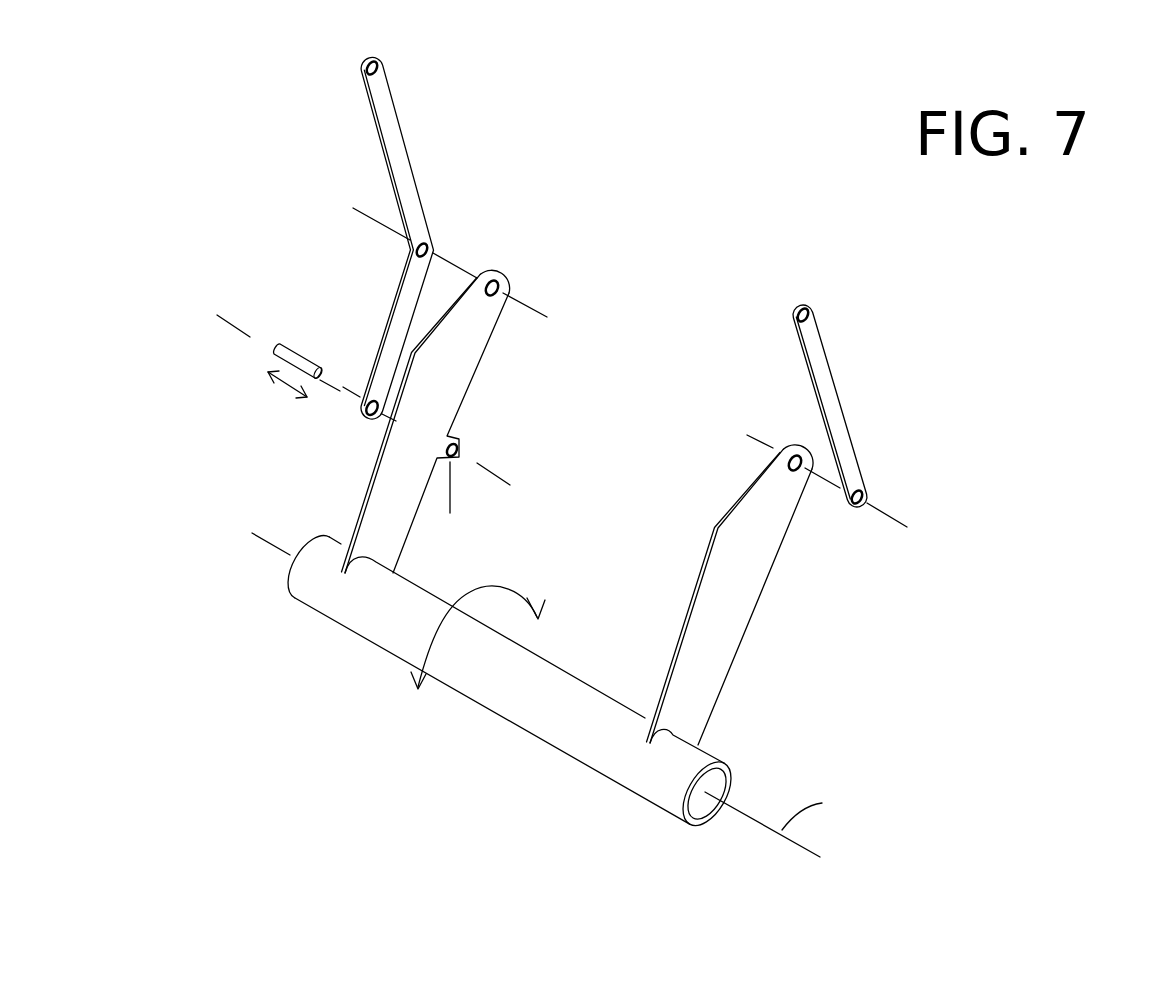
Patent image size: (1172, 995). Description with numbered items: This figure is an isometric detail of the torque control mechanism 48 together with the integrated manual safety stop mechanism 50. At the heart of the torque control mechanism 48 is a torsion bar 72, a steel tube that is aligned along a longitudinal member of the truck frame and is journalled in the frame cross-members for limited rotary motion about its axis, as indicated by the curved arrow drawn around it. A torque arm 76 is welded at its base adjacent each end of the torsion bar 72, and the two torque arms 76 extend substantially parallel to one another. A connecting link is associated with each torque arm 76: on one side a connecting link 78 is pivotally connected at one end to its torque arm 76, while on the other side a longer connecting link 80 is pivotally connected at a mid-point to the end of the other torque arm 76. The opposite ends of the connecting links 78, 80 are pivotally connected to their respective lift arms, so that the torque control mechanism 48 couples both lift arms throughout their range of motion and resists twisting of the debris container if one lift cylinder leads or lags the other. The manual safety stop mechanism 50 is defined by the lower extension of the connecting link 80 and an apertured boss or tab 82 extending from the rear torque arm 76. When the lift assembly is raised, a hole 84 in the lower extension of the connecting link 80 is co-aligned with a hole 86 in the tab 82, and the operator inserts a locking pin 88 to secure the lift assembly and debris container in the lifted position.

The torque control mechanism 48 is at (405, 800).
The manual safety stop mechanism 50 is at (272, 290).
The torsion bar 72 is at (537, 715).
The torque arm 76 is at (432, 413).
The connecting link 78 is at (817, 378).
The connecting link 80 is at (385, 112).
The tab 82 is at (462, 448).
The hole 84 is at (363, 409).
The hole 86 is at (452, 502).
The locking pin 88 is at (300, 362).